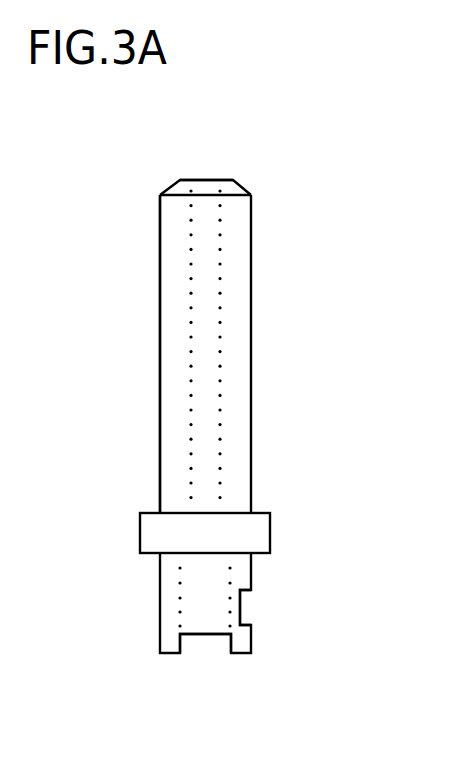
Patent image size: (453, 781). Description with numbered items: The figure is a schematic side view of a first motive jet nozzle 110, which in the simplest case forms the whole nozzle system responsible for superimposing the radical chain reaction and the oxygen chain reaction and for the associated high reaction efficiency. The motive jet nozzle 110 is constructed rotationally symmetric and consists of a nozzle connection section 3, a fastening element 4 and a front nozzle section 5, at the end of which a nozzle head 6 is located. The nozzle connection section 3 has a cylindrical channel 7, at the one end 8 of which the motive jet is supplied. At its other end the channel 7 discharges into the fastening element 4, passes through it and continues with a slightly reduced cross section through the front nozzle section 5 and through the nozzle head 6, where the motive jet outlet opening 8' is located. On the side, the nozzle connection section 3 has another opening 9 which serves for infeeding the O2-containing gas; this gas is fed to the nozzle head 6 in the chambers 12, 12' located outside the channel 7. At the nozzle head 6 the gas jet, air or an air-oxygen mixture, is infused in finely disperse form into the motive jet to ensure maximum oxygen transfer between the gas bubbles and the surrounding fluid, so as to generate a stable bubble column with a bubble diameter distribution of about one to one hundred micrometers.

The motive jet nozzle 110 is at (273, 232).
The nozzle head 6 is at (178, 188).
The motive jet outlet opening 8' is at (217, 141).
The front nozzle section 5 is at (158, 350).
The chamber 12' is at (274, 344).
The cylindrical channel 7 is at (218, 411).
The fastening element 4 is at (176, 523).
The nozzle connection section 3 is at (157, 584).
The chamber 12 is at (261, 588).
The opening 9 is at (247, 604).
The end 8 is at (205, 694).